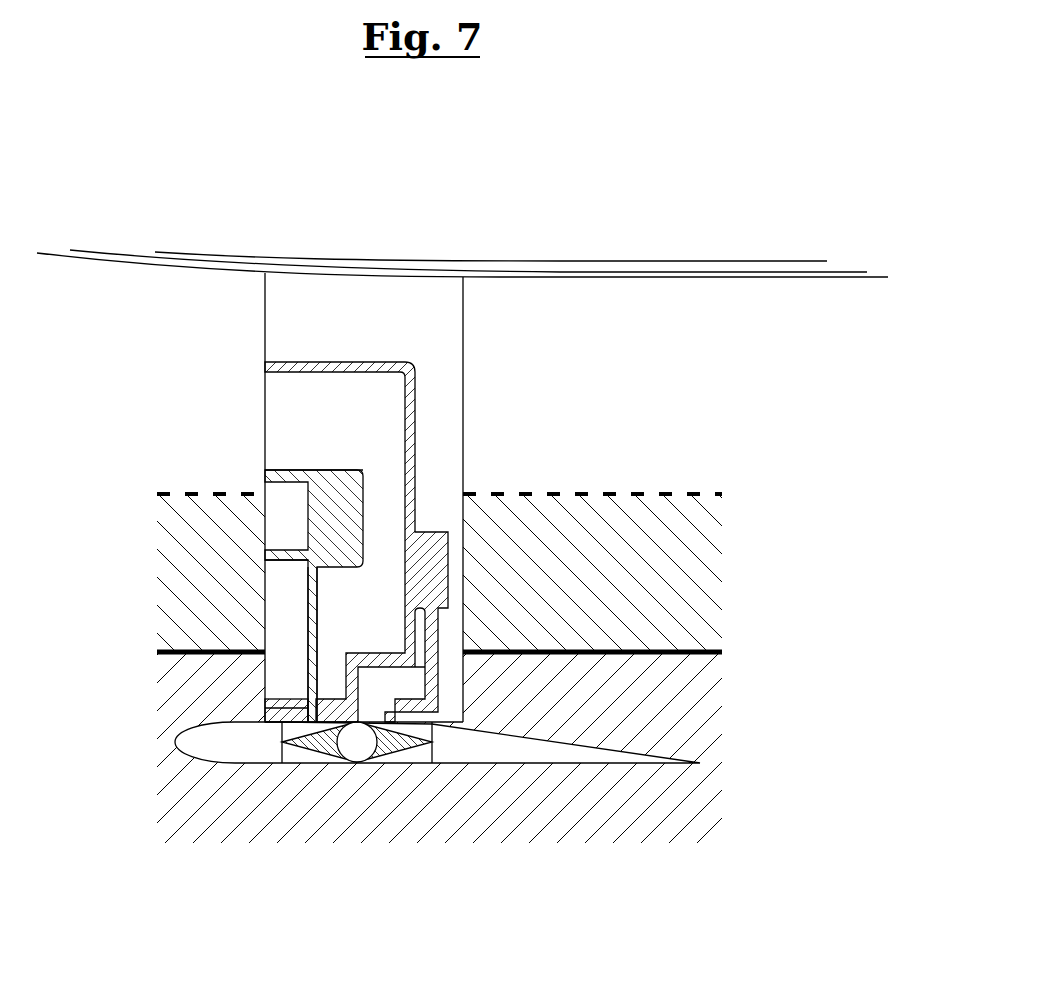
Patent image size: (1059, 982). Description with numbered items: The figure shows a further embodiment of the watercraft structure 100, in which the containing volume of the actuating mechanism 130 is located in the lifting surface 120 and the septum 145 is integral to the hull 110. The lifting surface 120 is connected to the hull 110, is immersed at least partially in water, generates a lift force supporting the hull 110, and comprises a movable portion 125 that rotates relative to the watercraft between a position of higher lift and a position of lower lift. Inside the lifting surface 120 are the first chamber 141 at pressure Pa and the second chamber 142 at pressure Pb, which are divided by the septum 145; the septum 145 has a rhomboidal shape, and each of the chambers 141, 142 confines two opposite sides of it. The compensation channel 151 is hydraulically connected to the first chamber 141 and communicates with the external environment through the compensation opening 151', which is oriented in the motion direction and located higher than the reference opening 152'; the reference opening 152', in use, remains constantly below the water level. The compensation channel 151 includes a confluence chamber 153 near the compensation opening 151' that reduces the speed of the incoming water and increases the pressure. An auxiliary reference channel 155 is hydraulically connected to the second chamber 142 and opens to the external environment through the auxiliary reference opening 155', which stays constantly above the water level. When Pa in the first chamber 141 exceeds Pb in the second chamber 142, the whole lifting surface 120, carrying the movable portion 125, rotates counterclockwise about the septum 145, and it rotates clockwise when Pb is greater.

The watercraft structure 100 is at (636, 172).
The hull 110 is at (732, 278).
The lifting surface 120 is at (372, 806).
The movable portion 125 is at (627, 768).
The actuating mechanism 130 is at (503, 680).
The first chamber 141 is at (298, 758).
The second chamber 142 is at (282, 742).
The septum 145 is at (356, 742).
The compensation channel 151 is at (190, 644).
The compensation opening 151' is at (239, 497).
The reference opening 152' is at (185, 755).
The confluence chamber 153 is at (347, 518).
The auxiliary reference channel 155 is at (280, 447).
The auxiliary reference opening 155' is at (188, 327).